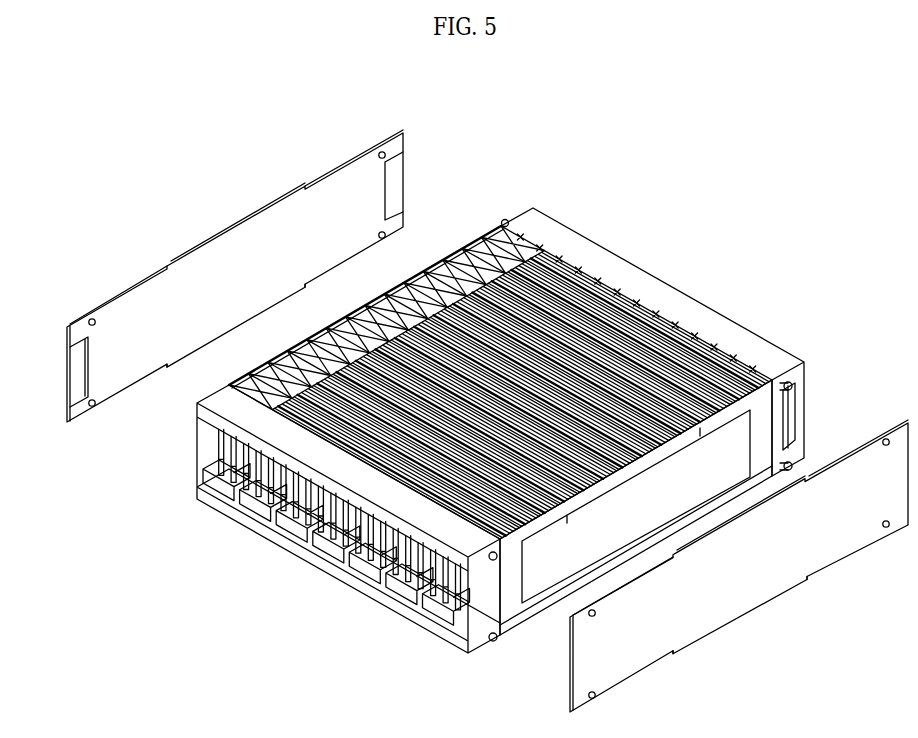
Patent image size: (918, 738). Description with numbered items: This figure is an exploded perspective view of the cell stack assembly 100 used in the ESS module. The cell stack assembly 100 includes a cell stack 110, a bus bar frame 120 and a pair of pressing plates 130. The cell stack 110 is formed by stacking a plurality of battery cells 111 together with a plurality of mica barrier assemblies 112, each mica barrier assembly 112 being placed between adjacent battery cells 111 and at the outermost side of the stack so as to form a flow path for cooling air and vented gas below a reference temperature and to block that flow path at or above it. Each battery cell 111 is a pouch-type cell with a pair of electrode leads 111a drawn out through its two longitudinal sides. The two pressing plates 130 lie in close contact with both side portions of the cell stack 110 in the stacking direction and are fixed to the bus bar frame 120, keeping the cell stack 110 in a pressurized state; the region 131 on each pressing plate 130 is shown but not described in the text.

The cell stack assembly 100 is at (637, 136).
The cell stack 110 is at (478, 224).
The battery cell 111 is at (504, 224).
The electrode lead 111a is at (303, 513).
The mica barrier assembly 112 is at (655, 312).
The bus bar frame 120 is at (272, 432).
The pressing plate 130 is at (78, 370).
The coupling portion 131 is at (200, 340).